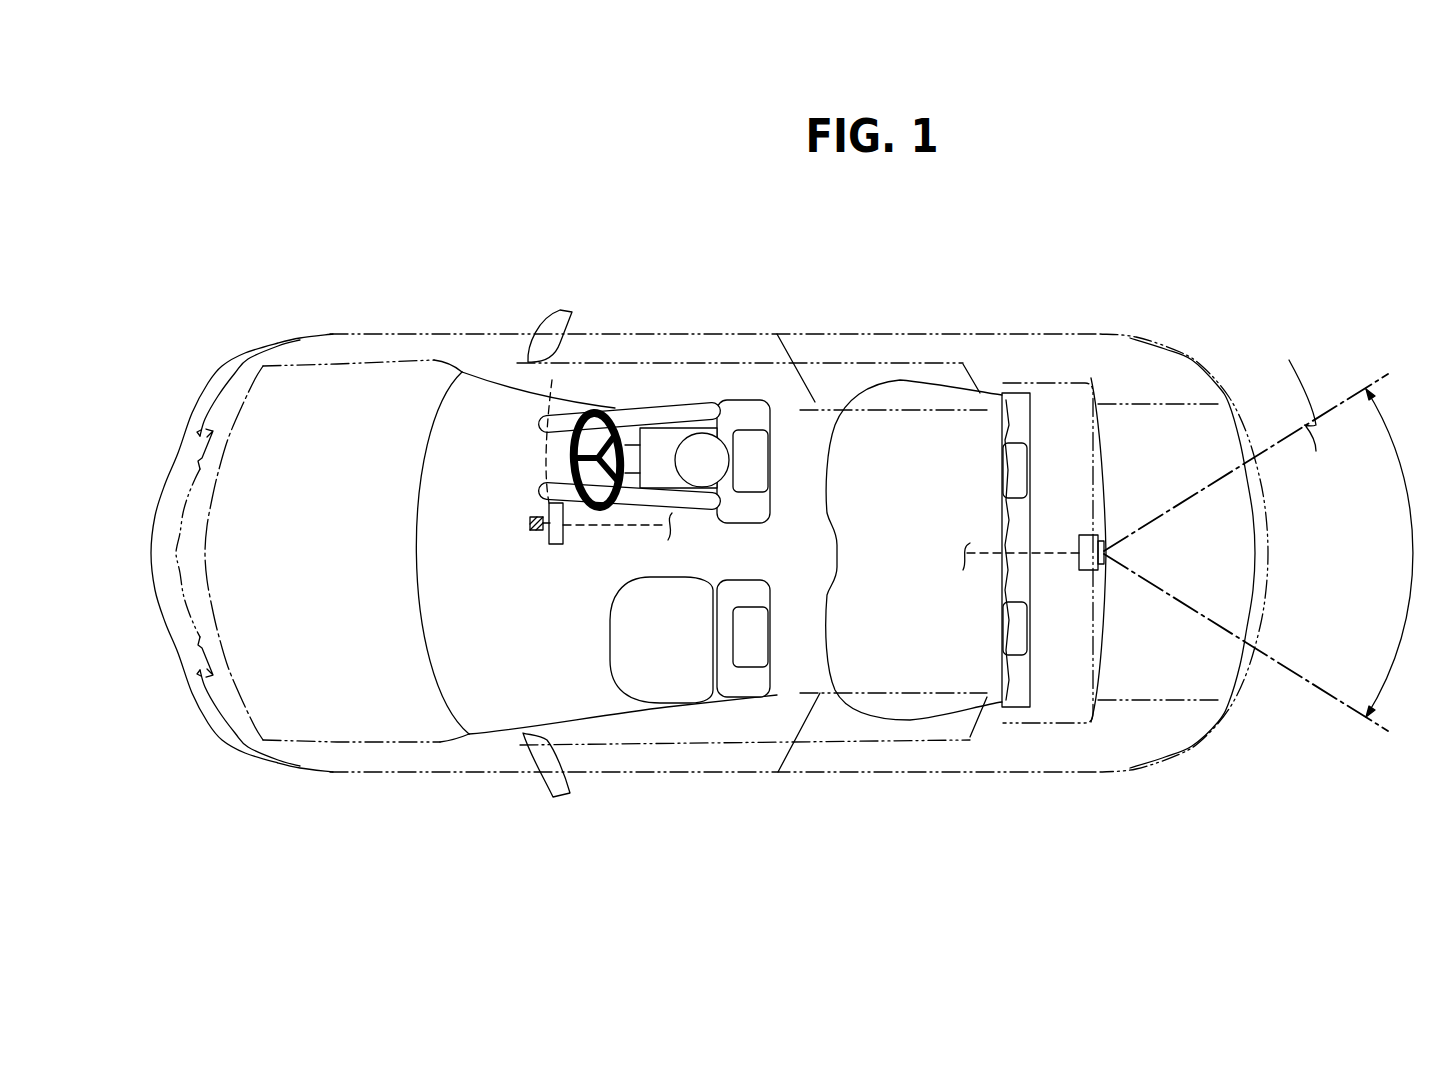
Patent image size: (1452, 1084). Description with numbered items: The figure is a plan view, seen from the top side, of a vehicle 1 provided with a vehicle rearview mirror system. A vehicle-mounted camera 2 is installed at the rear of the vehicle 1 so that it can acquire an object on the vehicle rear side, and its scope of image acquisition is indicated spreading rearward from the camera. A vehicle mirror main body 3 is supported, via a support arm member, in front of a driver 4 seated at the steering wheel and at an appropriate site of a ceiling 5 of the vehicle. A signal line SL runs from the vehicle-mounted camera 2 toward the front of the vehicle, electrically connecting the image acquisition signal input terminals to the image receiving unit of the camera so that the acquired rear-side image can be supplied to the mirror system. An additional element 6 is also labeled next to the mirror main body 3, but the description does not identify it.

The vehicle 1 is at (813, 333).
The vehicle-mounted camera 2 is at (1087, 570).
The vehicle mirror main body 3 is at (553, 547).
The driver 4 is at (662, 440).
The ceiling 5 is at (608, 398).
The steering sensor 6 is at (530, 517).
The signal line SL is at (1047, 553).